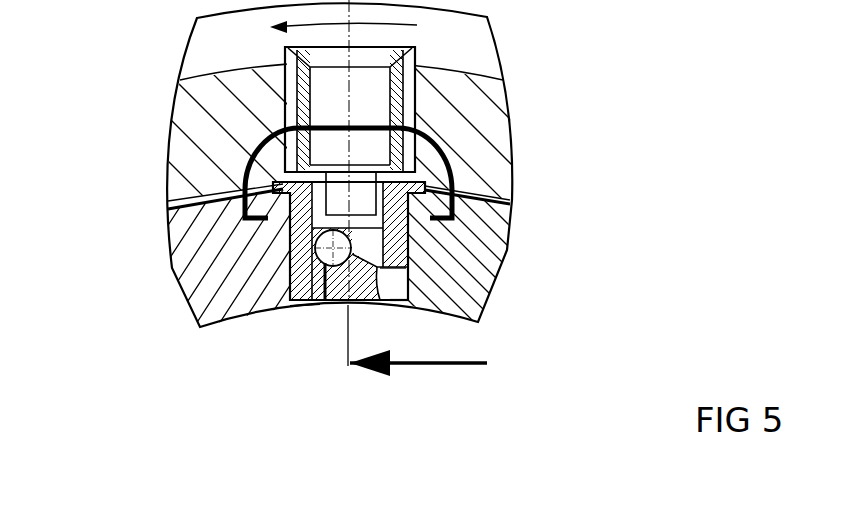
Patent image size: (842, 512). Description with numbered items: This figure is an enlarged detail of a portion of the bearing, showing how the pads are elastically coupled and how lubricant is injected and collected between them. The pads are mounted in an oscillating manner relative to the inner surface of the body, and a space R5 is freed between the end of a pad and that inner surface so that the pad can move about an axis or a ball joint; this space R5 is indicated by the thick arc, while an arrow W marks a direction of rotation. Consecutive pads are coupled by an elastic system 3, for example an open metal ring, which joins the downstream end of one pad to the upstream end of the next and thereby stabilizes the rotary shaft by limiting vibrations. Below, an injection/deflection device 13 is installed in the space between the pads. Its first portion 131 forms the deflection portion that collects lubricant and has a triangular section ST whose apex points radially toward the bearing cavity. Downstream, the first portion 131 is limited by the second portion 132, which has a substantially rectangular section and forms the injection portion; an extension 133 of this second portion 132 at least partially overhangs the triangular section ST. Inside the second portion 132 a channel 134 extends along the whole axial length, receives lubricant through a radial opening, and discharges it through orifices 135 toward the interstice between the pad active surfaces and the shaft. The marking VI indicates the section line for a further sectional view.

The elastic system 3 is at (443, 146).
The injection/deflection device 13 is at (332, 352).
The first portion 131 is at (402, 312).
The second portion 132 is at (309, 340).
The extension 133 is at (379, 318).
The channel 134 is at (315, 248).
The orifices 135 is at (314, 307).
The space R5 is at (450, 182).
The triangular section ST is at (399, 276).
The direction of rotation arrow W is at (343, 17).
The section line VI is at (453, 396).